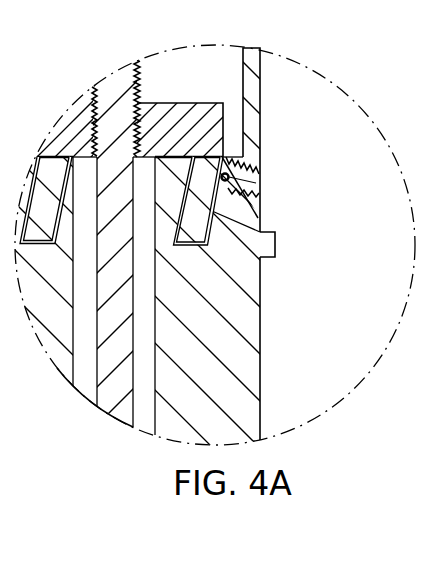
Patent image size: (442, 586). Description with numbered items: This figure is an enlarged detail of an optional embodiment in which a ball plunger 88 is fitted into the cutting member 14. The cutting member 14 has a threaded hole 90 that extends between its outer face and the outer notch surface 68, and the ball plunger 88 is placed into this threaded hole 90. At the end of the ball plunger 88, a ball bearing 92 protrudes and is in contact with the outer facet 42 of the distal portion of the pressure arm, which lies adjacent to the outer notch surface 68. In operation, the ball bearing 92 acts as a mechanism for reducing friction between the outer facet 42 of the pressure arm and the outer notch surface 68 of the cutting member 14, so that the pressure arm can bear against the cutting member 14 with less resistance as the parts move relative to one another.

The cutting member 14 is at (207, 327).
The outer facet 42 is at (262, 263).
The outer notch surface 68 is at (274, 236).
The ball plunger 88 is at (255, 184).
The threaded hole 90 is at (261, 217).
The ball bearing 92 is at (247, 158).